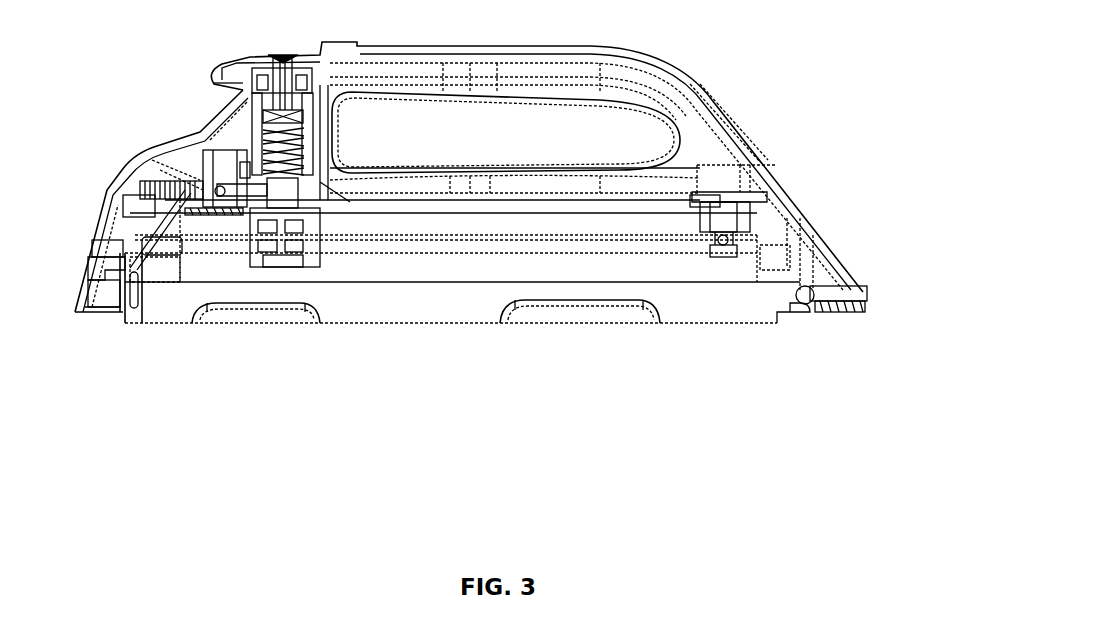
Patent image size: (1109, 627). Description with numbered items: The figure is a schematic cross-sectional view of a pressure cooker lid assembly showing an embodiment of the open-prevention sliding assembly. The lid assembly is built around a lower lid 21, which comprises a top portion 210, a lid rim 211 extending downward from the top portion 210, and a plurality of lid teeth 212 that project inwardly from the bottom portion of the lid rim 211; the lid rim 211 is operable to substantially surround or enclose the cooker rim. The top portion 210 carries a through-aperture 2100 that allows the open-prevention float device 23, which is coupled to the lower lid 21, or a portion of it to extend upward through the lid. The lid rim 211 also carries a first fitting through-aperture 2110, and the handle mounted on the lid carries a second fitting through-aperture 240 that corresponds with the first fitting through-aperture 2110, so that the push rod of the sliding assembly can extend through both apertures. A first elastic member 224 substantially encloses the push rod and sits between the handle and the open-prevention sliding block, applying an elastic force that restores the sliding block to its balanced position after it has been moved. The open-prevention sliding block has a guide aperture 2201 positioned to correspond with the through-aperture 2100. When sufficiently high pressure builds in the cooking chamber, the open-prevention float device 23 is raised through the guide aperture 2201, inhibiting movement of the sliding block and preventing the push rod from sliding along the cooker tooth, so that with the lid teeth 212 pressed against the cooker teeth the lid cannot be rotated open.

The lower lid 21 is at (358, 314).
The top portion 210 is at (480, 200).
The lid rim 211 is at (180, 295).
The lid teeth 212 is at (575, 303).
The through-aperture 2100 is at (710, 200).
The first fitting through-aperture 2110 is at (810, 303).
The guide aperture 2201 is at (723, 197).
The open-prevention float device 23 is at (722, 238).
The second fitting through-aperture 240 is at (857, 287).
The first elastic member 224 is at (835, 313).